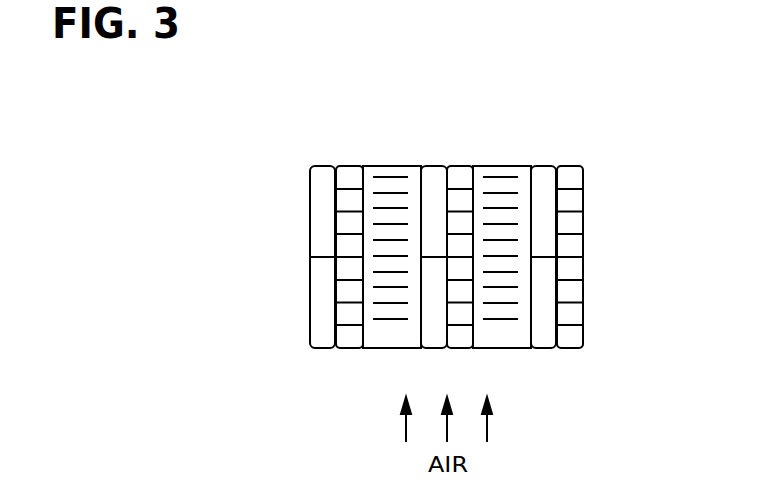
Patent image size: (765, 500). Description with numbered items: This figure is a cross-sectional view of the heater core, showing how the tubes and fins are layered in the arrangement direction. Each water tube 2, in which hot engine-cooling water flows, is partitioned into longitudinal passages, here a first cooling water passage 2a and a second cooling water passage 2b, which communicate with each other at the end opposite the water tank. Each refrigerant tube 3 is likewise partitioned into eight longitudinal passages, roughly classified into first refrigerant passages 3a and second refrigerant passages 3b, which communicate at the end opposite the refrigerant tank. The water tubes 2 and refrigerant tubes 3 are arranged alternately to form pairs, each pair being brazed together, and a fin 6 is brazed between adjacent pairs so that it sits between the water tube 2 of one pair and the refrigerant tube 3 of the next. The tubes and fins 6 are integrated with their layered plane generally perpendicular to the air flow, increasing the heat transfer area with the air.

The water tube 2 is at (322, 163).
The first cooling water passage 2a is at (318, 215).
The second cooling water passage 2b is at (320, 308).
The refrigerant tube 3 is at (349, 163).
The first refrigerant passages 3a is at (592, 166).
The second refrigerant passages 3b is at (592, 257).
The fin 6 is at (392, 170).